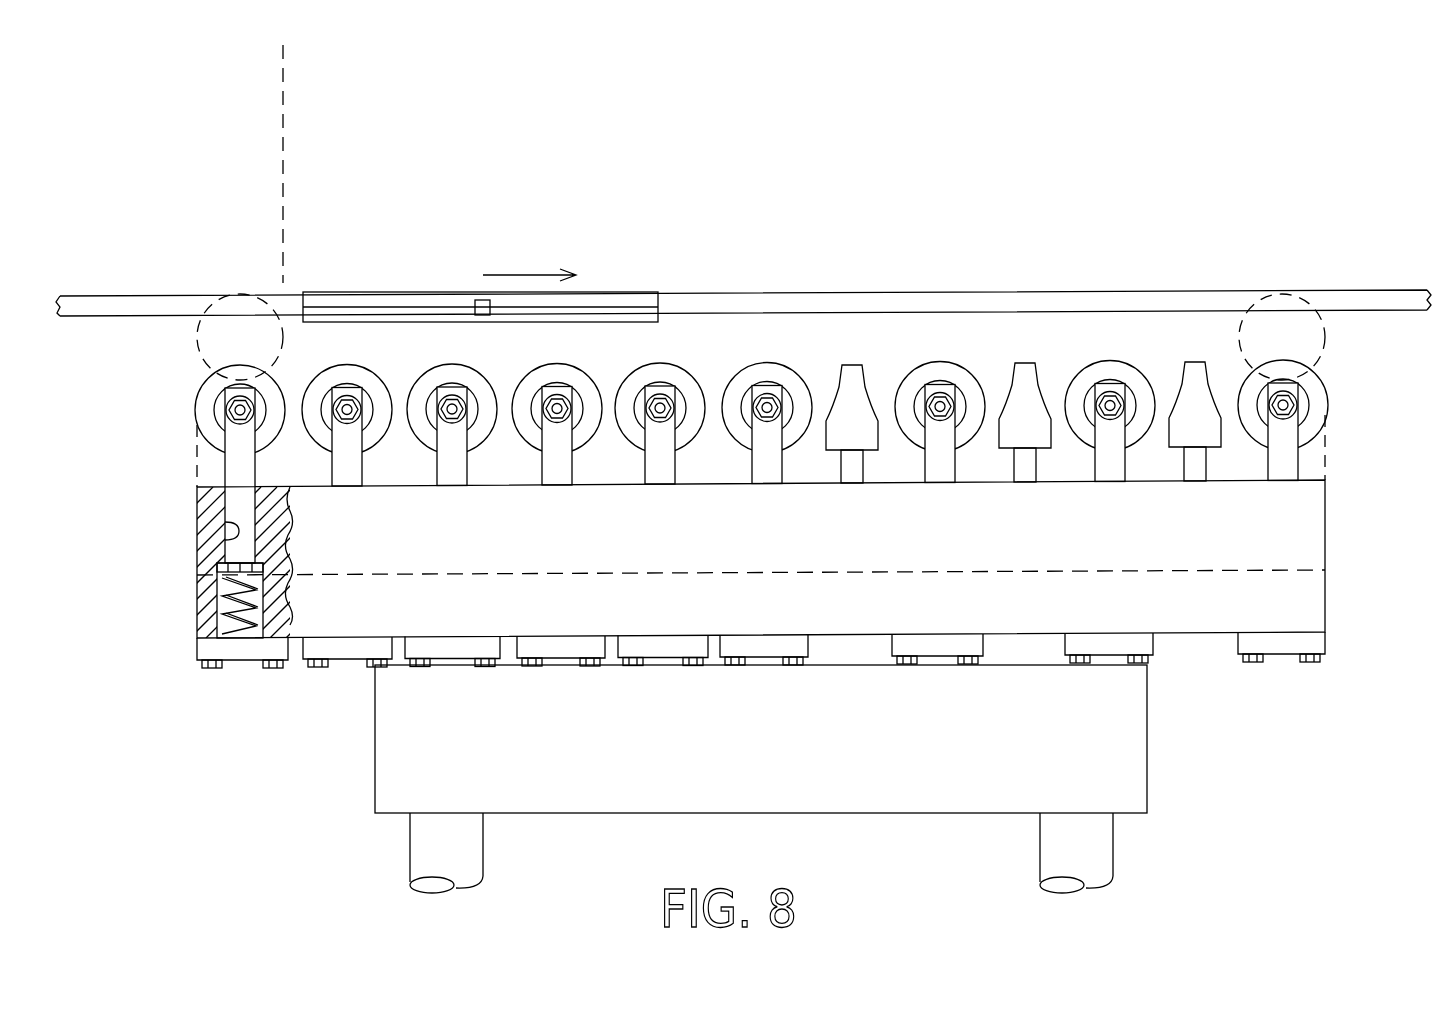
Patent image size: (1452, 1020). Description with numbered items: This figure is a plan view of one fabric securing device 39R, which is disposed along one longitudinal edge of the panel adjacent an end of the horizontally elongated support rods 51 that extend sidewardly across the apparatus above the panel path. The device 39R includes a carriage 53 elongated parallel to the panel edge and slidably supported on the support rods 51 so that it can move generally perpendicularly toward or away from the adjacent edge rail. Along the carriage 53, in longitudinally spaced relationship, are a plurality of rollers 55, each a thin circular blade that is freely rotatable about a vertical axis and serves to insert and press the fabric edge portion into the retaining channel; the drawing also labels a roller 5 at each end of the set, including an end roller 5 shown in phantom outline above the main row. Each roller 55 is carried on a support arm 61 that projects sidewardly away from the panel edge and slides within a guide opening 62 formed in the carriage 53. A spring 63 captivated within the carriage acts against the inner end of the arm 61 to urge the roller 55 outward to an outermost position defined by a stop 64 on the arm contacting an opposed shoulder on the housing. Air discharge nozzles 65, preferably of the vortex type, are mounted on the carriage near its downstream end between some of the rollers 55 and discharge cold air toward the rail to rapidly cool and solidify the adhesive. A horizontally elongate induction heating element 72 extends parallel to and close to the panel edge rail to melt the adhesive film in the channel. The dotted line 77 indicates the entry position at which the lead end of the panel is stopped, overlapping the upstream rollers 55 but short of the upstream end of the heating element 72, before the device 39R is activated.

The dotted line 77 is at (284, 97).
The electric heating element 72 is at (380, 300).
The roller 5 is at (225, 333).
The roller 55 is at (677, 382).
The support arm 61 is at (235, 465).
The guide opening 62 is at (224, 527).
The spring 63 is at (215, 632).
The stop 64 is at (252, 563).
The fabric securing device 39R is at (240, 699).
The air discharge nozzle 65 is at (1020, 397).
The carriage 53 is at (1303, 530).
The support rod 51 is at (455, 843).